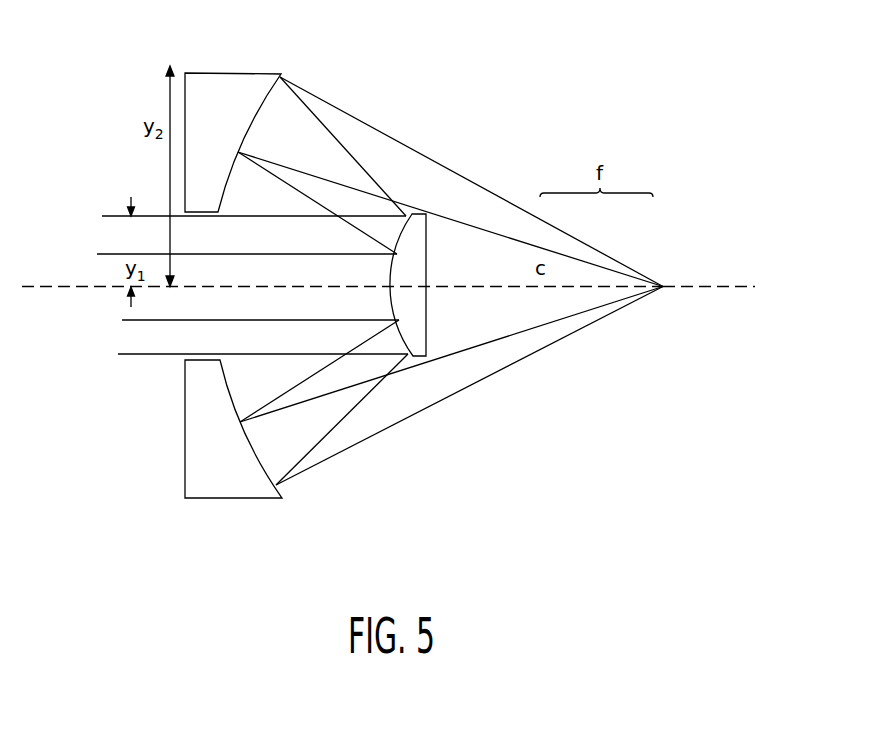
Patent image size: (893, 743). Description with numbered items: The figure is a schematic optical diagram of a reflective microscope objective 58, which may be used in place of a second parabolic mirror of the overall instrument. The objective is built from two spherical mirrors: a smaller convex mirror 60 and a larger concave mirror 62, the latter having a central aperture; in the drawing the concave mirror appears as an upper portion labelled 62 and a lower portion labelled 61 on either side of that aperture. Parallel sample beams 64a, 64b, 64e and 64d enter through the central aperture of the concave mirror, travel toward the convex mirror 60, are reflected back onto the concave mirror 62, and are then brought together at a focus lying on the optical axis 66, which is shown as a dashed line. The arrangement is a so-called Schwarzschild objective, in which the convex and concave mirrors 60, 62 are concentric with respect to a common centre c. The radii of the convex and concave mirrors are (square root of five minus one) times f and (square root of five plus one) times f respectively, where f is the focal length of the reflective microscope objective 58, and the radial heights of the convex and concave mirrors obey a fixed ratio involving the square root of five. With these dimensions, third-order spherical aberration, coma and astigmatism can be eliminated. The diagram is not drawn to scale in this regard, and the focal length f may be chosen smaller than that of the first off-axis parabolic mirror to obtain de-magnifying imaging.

The reflective microscope objective 58 is at (444, 113).
The convex mirror 60 is at (418, 243).
The lower mirror segment 61 is at (195, 430).
The concave mirror 62 is at (217, 85).
The parallel sample beam 64a is at (112, 215).
The parallel sample beam 64b is at (110, 252).
The parallel sample beam 64d is at (222, 354).
The light ray 64e is at (198, 320).
The optical axis 66 is at (710, 285).